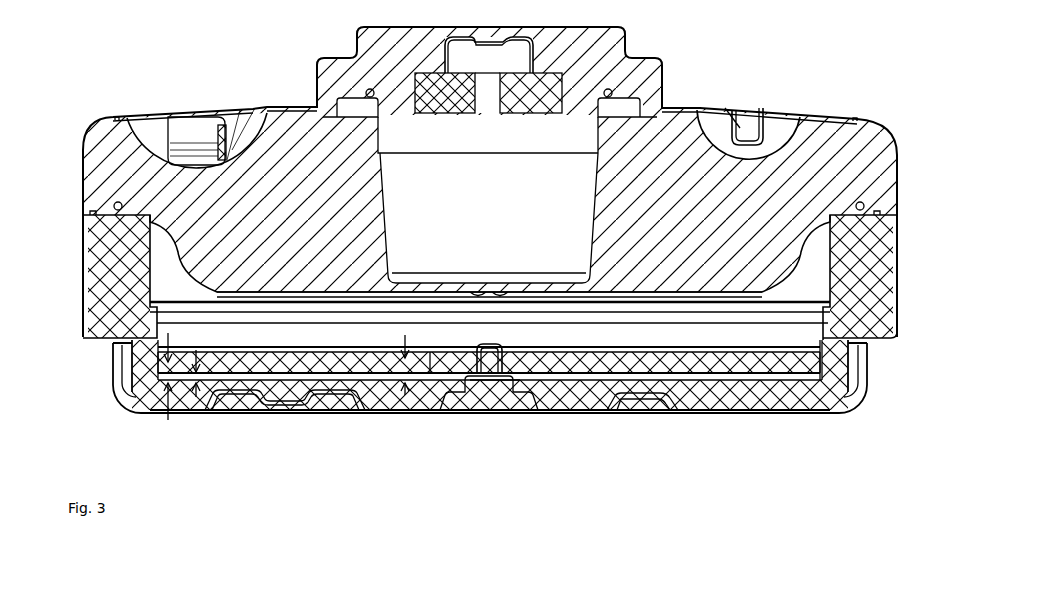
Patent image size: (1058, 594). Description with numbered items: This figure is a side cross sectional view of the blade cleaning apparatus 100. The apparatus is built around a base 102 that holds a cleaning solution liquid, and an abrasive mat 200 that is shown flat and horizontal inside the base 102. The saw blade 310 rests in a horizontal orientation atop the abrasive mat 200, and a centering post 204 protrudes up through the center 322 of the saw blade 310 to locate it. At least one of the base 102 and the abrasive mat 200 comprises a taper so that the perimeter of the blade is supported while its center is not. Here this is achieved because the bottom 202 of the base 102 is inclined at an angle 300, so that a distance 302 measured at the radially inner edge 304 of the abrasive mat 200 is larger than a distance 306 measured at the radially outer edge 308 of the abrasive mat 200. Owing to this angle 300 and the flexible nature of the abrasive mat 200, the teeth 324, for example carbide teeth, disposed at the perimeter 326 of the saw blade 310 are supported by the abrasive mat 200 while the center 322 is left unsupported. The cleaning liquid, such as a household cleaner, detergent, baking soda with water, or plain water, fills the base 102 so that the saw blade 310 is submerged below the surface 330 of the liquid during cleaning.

The blade cleaning apparatus 100 is at (92, 112).
The base 102 is at (878, 303).
The abrasive mat 200 is at (727, 360).
The bottom 202 is at (680, 378).
The centering post 204 is at (490, 360).
The angle 300 is at (196, 397).
The distance 302 is at (405, 395).
The radially inner edge 304 is at (448, 353).
The distance 306 is at (168, 384).
The radially outer edge 308 is at (155, 362).
The saw blade 310 is at (728, 334).
The center 322 is at (505, 348).
The teeth 324 is at (238, 346).
The perimeter 326 is at (242, 351).
The surface 330 is at (177, 302).